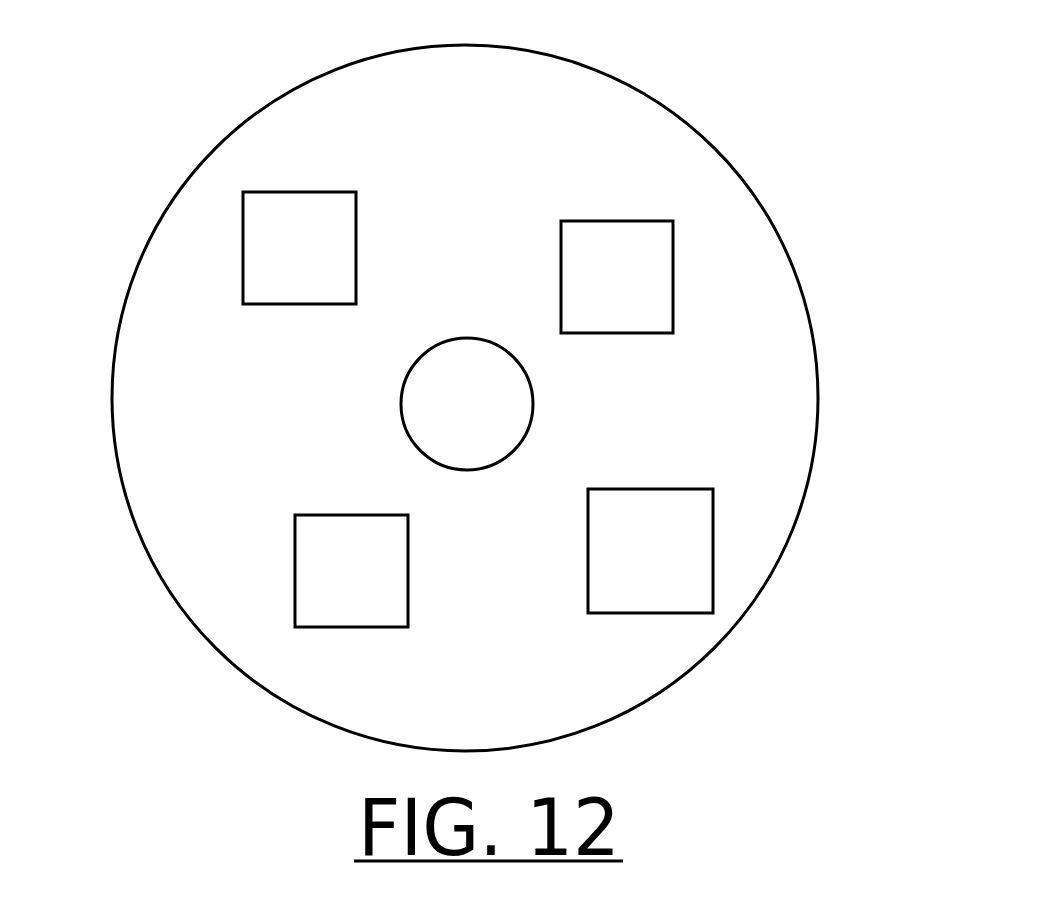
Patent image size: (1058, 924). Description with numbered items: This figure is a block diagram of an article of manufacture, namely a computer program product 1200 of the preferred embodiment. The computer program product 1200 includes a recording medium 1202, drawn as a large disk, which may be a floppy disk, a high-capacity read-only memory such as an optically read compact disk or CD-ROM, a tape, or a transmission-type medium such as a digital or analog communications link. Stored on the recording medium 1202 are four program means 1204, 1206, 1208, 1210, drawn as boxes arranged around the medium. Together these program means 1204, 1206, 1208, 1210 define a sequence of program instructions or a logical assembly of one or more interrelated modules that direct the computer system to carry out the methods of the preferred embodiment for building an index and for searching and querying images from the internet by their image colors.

The computer program product 1200 is at (762, 167).
The recording medium 1202 is at (188, 227).
The program means 1204 is at (617, 277).
The program means 1206 is at (650, 551).
The program means 1208 is at (351, 571).
The program means 1210 is at (299, 248).